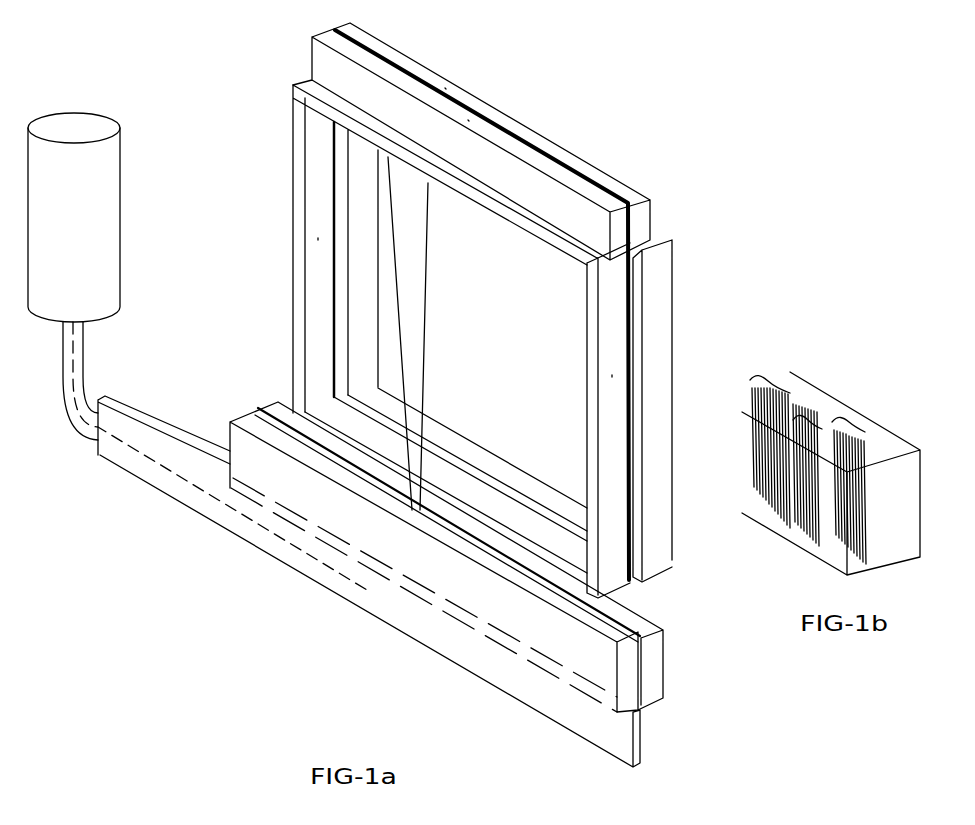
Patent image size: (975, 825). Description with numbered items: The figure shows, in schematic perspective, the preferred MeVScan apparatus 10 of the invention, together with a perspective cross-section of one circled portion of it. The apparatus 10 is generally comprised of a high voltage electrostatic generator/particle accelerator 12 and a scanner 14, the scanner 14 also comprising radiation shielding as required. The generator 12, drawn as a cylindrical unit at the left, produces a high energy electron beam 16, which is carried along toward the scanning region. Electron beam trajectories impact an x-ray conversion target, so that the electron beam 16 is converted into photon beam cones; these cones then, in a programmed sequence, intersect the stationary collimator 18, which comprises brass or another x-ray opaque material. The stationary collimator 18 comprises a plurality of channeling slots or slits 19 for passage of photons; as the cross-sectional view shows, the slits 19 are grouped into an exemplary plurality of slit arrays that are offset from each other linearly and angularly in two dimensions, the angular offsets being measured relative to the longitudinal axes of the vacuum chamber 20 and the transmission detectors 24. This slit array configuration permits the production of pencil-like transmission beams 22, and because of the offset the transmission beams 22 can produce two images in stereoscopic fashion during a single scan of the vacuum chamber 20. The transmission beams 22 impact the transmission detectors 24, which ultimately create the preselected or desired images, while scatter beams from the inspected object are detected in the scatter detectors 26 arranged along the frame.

In FIG. 1A, the MeVScan apparatus 10 is at (604, 121).
In FIG. 1A, the high voltage electrostatic generator/particle accelerator 12 is at (95, 262).
In FIG. 1A, the scanner 14 is at (252, 605).
In FIG. 1A, the high energy electron beam 16 is at (115, 435).
In FIG. 1A, the stationary collimator 18 is at (483, 602).
In FIG. 1B, the channeling slots or slits 19 is at (778, 378).
In FIG. 1A, the vacuum chamber 20 is at (245, 540).
In FIG. 1A, the pencil-like transmission beams 22 is at (425, 352).
In FIG. 1A, the transmission detectors 24 is at (468, 120).
In FIG. 1A, the scatter detectors 26 is at (320, 95).